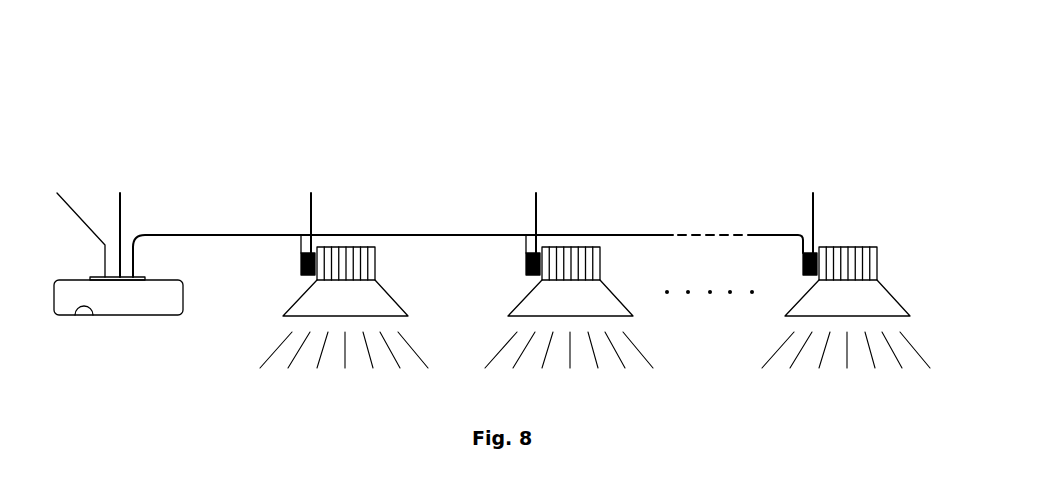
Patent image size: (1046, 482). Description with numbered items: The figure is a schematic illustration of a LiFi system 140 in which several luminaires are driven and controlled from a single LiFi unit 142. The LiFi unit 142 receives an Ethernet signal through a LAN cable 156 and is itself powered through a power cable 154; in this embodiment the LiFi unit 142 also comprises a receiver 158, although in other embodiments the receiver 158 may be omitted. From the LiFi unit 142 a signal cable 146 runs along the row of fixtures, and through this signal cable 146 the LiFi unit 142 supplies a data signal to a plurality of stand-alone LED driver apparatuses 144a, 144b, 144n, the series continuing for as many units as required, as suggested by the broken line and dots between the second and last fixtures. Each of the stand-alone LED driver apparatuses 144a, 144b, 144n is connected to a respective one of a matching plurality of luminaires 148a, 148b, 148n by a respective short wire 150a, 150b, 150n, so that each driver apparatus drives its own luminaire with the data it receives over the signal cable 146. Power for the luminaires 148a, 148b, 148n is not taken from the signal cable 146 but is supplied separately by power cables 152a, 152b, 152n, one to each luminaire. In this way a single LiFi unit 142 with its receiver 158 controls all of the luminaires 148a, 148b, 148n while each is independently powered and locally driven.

The LiFi system 140 is at (315, 108).
The LiFi unit 142 is at (165, 317).
The stand-alone LED driver apparatus 144a is at (301, 270).
The stand-alone LED driver apparatus 144b is at (526, 270).
The stand-alone LED driver apparatus 144n is at (803, 270).
The signal cable 146 is at (203, 235).
The luminaire 148a is at (375, 268).
The luminaire 148b is at (600, 268).
The luminaire 148n is at (877, 268).
The short wire 150a is at (317, 277).
The short wire 150b is at (542, 277).
The short wire 150n is at (817, 277).
The power cable 152a is at (312, 207).
The power cable 152b is at (537, 207).
The power cable 152n is at (814, 207).
The power cable 154 is at (122, 210).
The LAN cable 156 is at (73, 205).
The receiver 158 is at (83, 317).